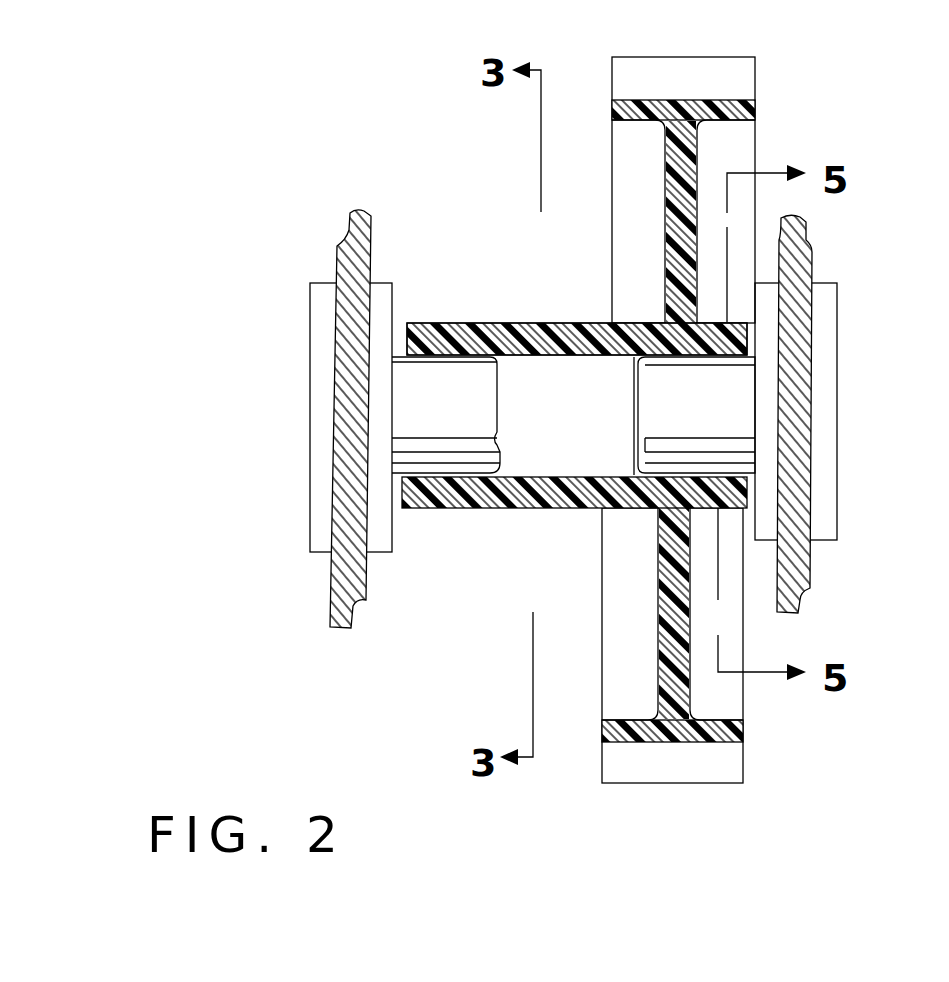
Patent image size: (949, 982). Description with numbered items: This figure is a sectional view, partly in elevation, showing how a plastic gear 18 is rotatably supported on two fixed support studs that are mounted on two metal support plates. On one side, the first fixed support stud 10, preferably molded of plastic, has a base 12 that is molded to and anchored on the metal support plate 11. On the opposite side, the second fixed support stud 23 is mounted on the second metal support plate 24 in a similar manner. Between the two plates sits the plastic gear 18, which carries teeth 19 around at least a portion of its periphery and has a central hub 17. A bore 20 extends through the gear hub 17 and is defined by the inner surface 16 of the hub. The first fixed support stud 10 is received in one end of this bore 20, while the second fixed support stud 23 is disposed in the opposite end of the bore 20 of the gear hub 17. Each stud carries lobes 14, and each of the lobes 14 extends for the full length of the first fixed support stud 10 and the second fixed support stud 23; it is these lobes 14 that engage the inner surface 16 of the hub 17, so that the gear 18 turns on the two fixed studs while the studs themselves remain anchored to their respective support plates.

The first fixed support stud 10 is at (516, 440).
The metal support plate 11 is at (320, 250).
The base 12 is at (378, 554).
The lobes 14 is at (447, 323).
The inner surface 16 is at (625, 362).
The hub 17 is at (553, 323).
The plastic gear 18 is at (758, 738).
The teeth 19 is at (730, 57).
The bore 20 is at (552, 403).
The second fixed support stud 23 is at (630, 421).
The second metal support plate 24 is at (830, 586).